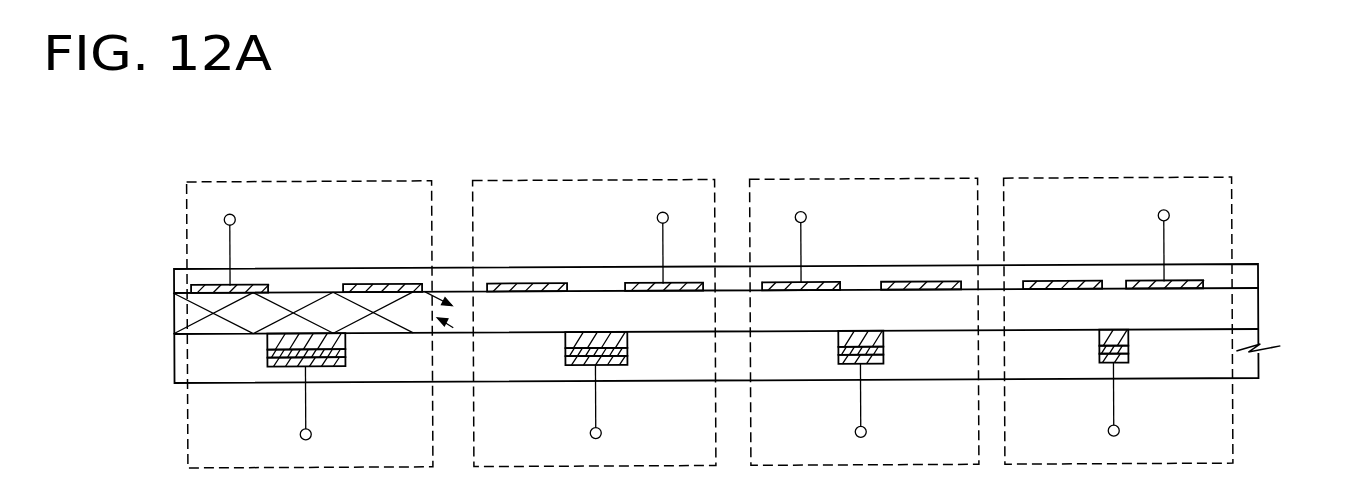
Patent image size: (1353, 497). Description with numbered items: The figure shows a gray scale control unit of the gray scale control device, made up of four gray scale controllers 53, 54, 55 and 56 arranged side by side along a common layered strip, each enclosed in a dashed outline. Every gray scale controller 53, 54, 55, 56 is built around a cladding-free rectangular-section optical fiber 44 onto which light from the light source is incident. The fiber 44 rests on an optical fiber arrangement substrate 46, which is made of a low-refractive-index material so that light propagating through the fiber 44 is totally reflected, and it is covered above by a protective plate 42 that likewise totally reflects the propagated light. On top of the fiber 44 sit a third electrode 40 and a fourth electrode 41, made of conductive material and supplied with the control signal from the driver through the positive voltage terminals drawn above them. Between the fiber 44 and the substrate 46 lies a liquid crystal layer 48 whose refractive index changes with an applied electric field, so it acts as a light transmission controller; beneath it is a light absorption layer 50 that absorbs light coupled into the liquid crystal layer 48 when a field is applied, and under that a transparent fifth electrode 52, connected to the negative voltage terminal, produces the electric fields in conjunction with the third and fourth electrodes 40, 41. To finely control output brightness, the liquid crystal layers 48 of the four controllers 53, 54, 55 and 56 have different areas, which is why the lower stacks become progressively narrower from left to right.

The third electrode 40 is at (388, 285).
The fourth electrode 41 is at (252, 285).
The protective plate 42 is at (1250, 283).
The cladding-free rectangular-section optical fiber 44 is at (1250, 317).
The optical fiber arrangement substrate 46 is at (1250, 373).
The liquid crystal layer 48 is at (267, 347).
The light absorption layer 50 is at (281, 367).
The fifth electrode 52 is at (337, 364).
The gray scale controller 53 is at (313, 182).
The gray scale controller 54 is at (590, 182).
The gray scale controller 55 is at (852, 182).
The gray scale controller 56 is at (1106, 182).